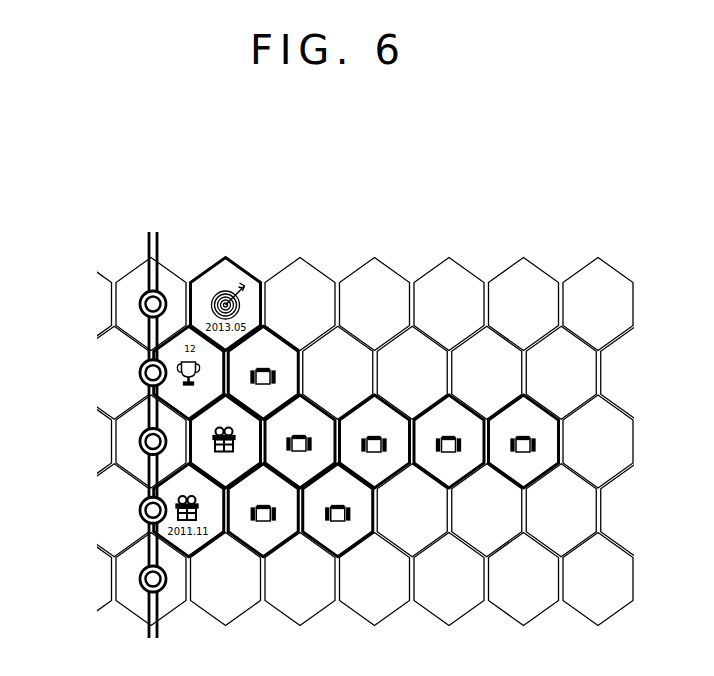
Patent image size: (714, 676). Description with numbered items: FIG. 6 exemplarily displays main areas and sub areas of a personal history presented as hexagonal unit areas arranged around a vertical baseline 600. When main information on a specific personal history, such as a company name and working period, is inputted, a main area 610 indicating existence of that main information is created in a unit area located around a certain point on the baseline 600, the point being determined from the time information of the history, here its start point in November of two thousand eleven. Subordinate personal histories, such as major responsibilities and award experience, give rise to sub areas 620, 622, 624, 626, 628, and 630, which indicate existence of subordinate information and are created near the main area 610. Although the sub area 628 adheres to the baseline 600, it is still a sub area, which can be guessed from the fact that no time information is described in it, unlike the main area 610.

The baseline 600 is at (147, 250).
The main area 610 is at (192, 427).
The sub area 620 is at (320, 403).
The sub area 622 is at (393, 407).
The sub area 624 is at (467, 408).
The sub area 626 is at (543, 407).
The sub area 628 is at (142, 336).
The sub area 630 is at (285, 337).